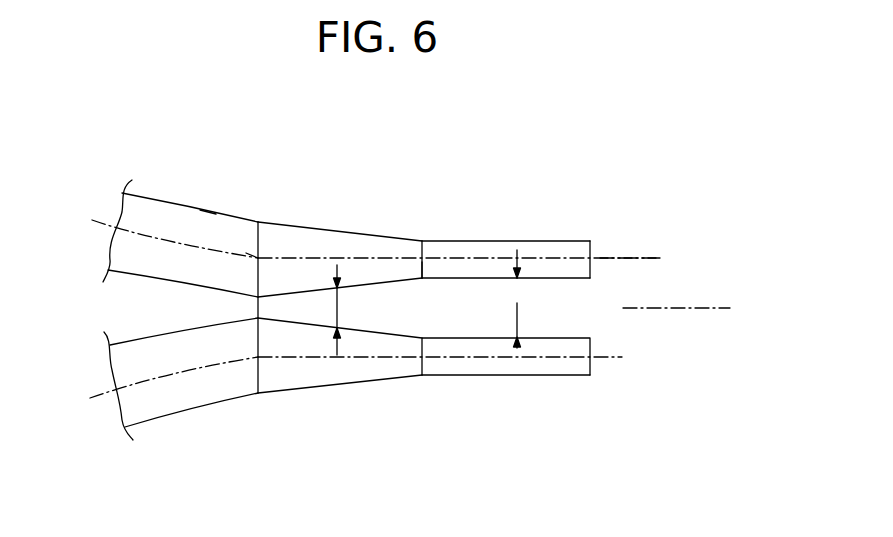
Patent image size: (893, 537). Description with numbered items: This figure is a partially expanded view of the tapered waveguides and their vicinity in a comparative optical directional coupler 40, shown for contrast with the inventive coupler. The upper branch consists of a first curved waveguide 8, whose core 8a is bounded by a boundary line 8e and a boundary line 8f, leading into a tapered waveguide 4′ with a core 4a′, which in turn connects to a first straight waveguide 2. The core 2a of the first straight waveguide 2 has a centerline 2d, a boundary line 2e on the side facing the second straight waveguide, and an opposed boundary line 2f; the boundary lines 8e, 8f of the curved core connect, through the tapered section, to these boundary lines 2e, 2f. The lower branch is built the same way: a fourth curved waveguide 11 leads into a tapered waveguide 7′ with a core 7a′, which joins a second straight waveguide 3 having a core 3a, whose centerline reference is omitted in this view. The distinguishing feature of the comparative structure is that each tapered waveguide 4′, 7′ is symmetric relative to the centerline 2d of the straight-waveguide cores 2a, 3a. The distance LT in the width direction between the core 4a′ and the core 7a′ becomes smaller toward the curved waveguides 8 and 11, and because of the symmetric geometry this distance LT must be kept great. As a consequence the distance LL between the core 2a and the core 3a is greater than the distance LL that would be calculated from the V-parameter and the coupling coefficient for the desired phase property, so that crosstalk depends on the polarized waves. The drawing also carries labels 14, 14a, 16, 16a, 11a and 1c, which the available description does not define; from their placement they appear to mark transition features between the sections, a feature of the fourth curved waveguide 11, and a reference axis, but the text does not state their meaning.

The comparative optical directional coupler 40 is at (626, 136).
The first curved waveguide 8 is at (183, 192).
The core of the curved waveguide 8a is at (155, 200).
The boundary line of the curved waveguide core 8e is at (135, 282).
The boundary line of the curved waveguide core 8f is at (208, 212).
The step portion 16 is at (258, 232).
The step face 16a is at (258, 258).
The tapered waveguide 4′ is at (354, 206).
The core of the tapered waveguide 4a′ is at (301, 238).
The shoulder portion 14 is at (423, 252).
The shoulder face 14a is at (423, 262).
The first straight waveguide 2 is at (469, 224).
The core of the first straight waveguide 2a is at (497, 250).
The boundary line on the first-straight-waveguide side 2f is at (553, 241).
The boundary line on the second-straight-waveguide side 2e is at (548, 278).
The centerline 2d is at (640, 257).
The fourth curved waveguide 11 is at (230, 426).
The inner surface of second pipe portion 11a is at (163, 400).
The tapered waveguide 7′ is at (331, 402).
The core of the tapered waveguide 7a′ is at (285, 372).
The second straight waveguide 3 is at (494, 395).
The core of the second straight waveguide 3a is at (453, 365).
The center axis 1c is at (698, 310).
The distance between tapered waveguide cores LT is at (338, 307).
The distance between straight waveguide cores LL is at (518, 303).